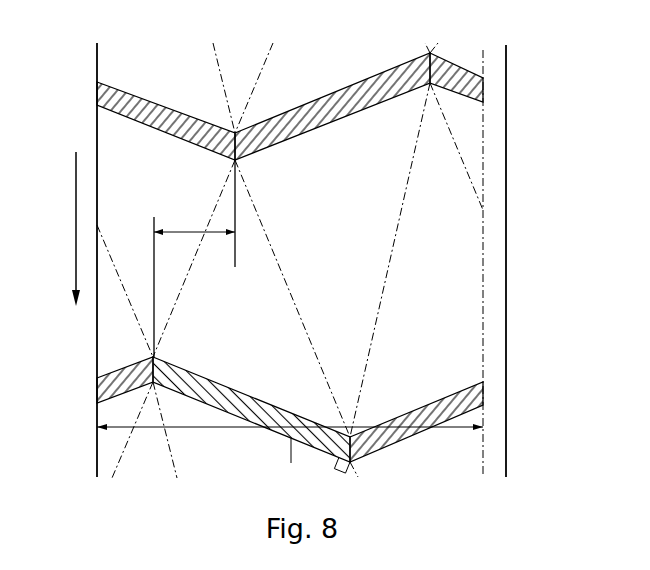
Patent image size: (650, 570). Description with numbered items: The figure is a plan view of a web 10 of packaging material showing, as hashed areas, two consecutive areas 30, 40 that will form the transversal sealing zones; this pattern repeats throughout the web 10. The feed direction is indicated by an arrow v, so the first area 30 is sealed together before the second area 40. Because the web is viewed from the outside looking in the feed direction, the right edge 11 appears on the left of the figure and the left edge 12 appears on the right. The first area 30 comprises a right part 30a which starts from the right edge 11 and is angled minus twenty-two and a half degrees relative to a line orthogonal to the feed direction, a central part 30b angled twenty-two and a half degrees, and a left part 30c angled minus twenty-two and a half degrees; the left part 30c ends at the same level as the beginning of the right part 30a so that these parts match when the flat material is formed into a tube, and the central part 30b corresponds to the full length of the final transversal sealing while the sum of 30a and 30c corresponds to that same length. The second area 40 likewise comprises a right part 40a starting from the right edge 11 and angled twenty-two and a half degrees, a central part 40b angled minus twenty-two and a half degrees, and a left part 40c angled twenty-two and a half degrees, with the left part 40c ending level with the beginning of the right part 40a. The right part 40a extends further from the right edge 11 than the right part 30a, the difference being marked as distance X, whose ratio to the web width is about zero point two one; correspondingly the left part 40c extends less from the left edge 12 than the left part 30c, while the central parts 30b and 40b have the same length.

The web of packaging material 10 is at (142, 67).
The right edge 11 is at (97, 340).
The left edge 12 is at (483, 232).
The first area 30 is at (465, 397).
The right part 30a is at (115, 380).
The central part 30b is at (238, 405).
The left part 30c is at (388, 423).
The second area 40 is at (384, 76).
The right part 40a is at (138, 115).
The central part 40b is at (333, 107).
The left part 40c is at (460, 65).